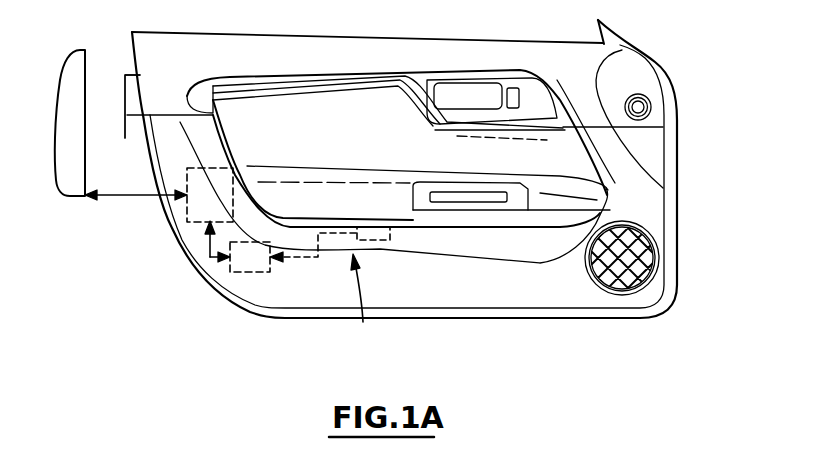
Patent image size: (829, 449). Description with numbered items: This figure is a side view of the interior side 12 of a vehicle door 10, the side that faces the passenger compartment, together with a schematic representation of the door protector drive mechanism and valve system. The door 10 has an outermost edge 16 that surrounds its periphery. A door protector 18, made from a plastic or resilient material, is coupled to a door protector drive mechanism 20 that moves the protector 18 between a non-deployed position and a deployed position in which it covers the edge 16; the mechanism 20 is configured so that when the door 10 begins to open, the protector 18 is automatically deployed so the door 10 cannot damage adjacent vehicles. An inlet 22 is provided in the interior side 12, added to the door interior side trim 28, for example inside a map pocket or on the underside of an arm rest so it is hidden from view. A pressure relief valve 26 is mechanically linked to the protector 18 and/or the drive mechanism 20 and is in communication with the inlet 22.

The door 10 is at (400, 186).
The interior side 12 is at (643, 208).
The outermost edge 16 is at (125, 138).
The door protector 18 is at (65, 173).
The door protector drive mechanism 20 is at (192, 168).
The inlet 22 is at (388, 242).
The pressure relief valve 26 is at (237, 273).
The door interior side trim 28 is at (363, 322).